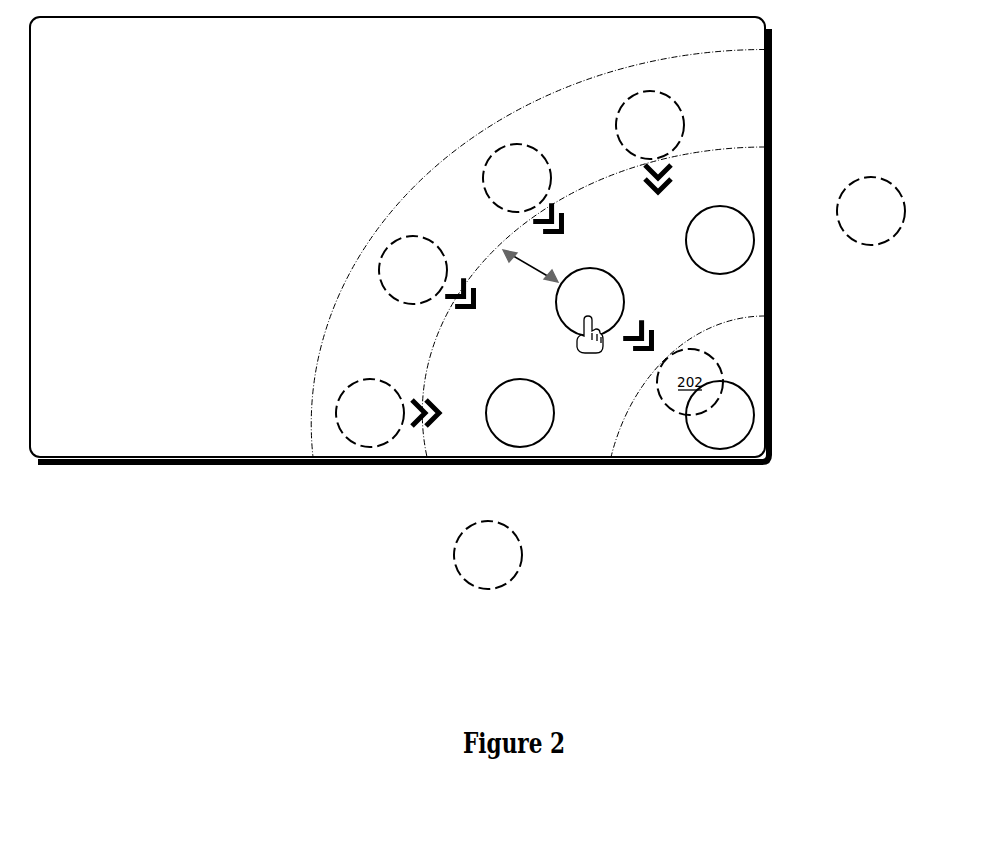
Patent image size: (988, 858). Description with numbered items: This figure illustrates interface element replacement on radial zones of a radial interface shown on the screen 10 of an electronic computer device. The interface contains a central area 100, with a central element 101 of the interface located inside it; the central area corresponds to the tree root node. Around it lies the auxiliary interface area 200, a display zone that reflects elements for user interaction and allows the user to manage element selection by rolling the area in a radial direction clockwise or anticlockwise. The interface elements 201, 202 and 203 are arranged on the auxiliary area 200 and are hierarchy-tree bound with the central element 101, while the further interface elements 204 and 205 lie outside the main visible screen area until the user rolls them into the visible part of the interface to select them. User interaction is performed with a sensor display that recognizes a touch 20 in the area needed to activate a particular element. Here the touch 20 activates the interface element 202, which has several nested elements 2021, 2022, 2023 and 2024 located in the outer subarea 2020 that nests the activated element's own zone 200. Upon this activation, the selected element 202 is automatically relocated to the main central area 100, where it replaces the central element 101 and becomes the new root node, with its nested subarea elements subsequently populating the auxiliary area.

The screen 10 is at (677, 47).
The outer subarea 2020 is at (754, 91).
The auxiliary interface area 200 is at (736, 184).
The central area 100 is at (761, 349).
The interface element of outer subarea 2021 is at (354, 421).
The interface element of outer subarea 2022 is at (397, 278).
The interface element of outer subarea 2023 is at (501, 186).
The interface element of outer subarea 2024 is at (634, 133).
The interface element 201 is at (508, 421).
The interface element 202 is at (578, 310).
The interface element 203 is at (708, 248).
The interface element 204 is at (859, 219).
The interface element 205 is at (476, 563).
The central element 101 is at (708, 423).
The touch 20 is at (580, 353).